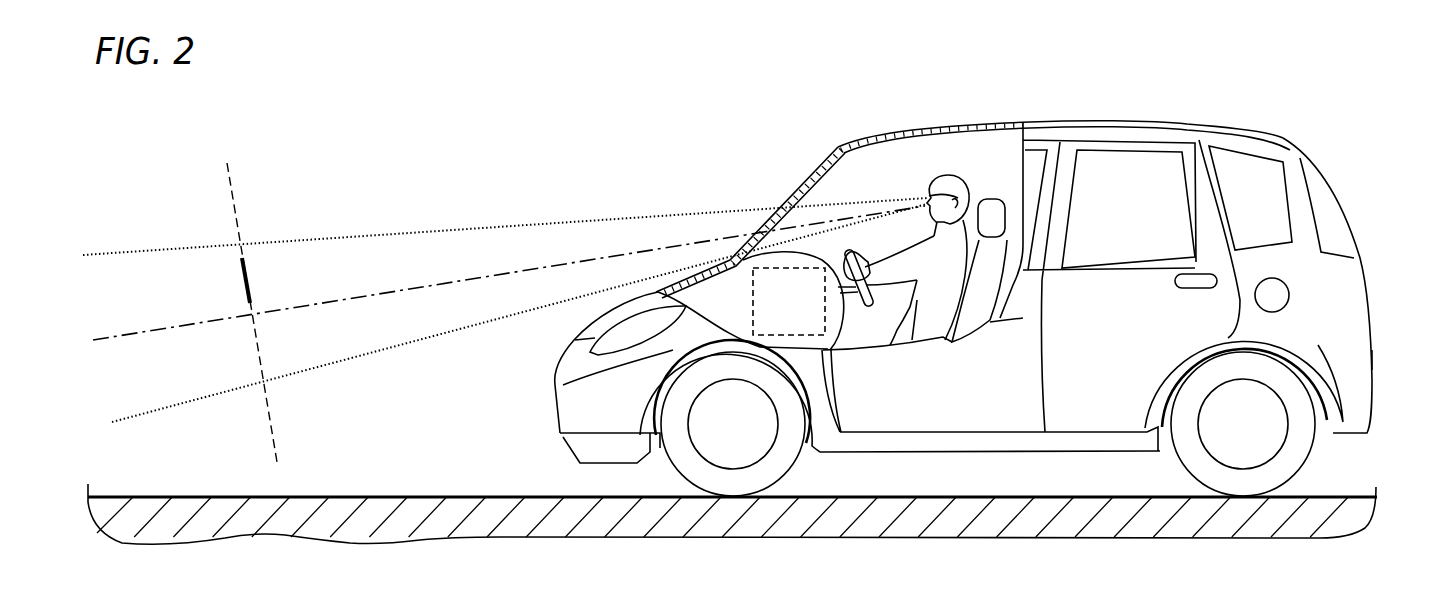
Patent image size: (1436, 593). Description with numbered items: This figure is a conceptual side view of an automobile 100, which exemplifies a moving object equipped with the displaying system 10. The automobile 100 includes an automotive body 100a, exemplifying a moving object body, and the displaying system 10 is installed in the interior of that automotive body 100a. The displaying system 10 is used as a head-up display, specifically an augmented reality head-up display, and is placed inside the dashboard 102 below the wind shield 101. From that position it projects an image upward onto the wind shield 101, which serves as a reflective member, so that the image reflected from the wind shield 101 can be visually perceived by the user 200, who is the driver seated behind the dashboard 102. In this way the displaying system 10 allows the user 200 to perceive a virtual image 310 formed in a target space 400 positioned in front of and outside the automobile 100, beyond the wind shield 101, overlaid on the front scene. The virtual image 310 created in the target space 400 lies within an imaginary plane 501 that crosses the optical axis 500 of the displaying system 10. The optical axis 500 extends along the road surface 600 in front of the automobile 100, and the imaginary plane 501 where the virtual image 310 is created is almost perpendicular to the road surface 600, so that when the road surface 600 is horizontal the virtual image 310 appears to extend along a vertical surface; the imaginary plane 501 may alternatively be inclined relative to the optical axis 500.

The displaying system 10 is at (767, 299).
The automobile 100 is at (1288, 131).
The automotive body 100a is at (1350, 300).
The wind shield 101 is at (802, 188).
The dashboard 102 is at (835, 327).
The user 200 is at (962, 190).
The virtual image 310 is at (252, 268).
The target space 400 is at (535, 222).
The optical axis 500 is at (128, 340).
The imaginary plane 501 is at (228, 172).
The road surface 600 is at (424, 495).